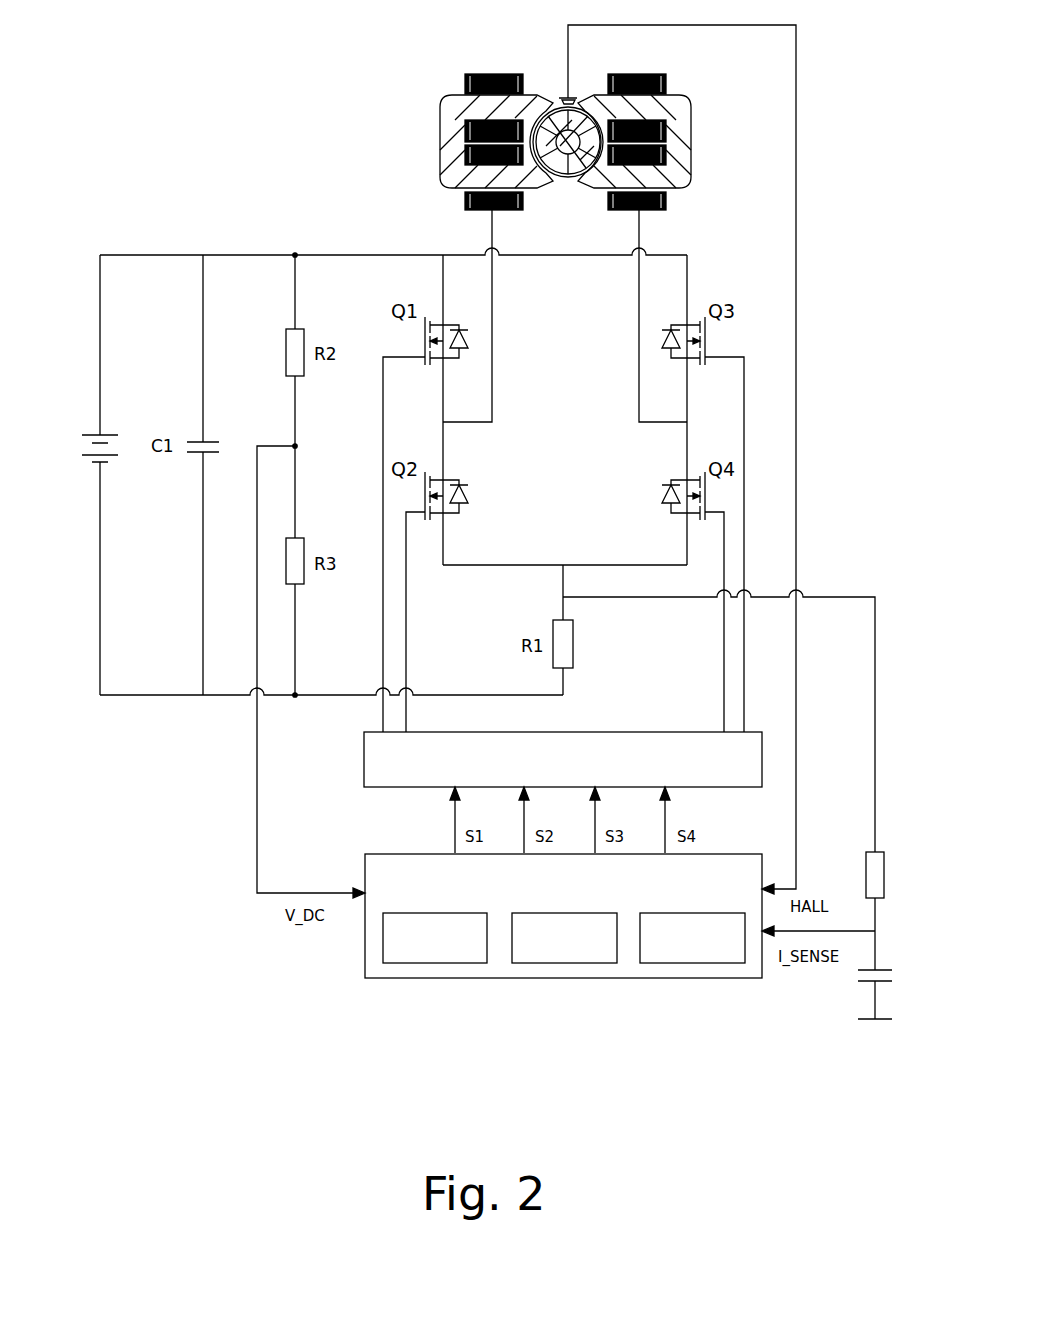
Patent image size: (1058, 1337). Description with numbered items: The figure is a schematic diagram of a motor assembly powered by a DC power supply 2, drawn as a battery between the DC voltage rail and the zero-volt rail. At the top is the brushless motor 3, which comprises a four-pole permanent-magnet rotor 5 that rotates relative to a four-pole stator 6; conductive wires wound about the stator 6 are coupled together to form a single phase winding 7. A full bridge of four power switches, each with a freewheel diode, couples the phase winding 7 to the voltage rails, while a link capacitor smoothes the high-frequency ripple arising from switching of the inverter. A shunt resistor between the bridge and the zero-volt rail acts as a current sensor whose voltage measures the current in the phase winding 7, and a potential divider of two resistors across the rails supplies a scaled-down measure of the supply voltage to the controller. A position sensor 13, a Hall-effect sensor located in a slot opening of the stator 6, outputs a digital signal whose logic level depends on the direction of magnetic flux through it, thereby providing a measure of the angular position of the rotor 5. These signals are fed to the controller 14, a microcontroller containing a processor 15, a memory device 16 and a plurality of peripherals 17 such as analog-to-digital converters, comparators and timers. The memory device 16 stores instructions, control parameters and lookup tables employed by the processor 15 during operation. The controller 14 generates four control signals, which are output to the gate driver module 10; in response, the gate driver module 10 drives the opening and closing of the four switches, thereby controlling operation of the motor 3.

The DC power supply 2 is at (78, 456).
The brushless motor 3 is at (430, 68).
The rotor 5 is at (569, 178).
The stator 6 is at (440, 140).
The phase winding 7 is at (492, 74).
The gate driver module 10 is at (364, 762).
The position sensor 13 is at (562, 97).
The controller 14 is at (365, 958).
The processor 15 is at (435, 963).
The memory device 16 is at (563, 963).
The peripherals 17 is at (693, 963).